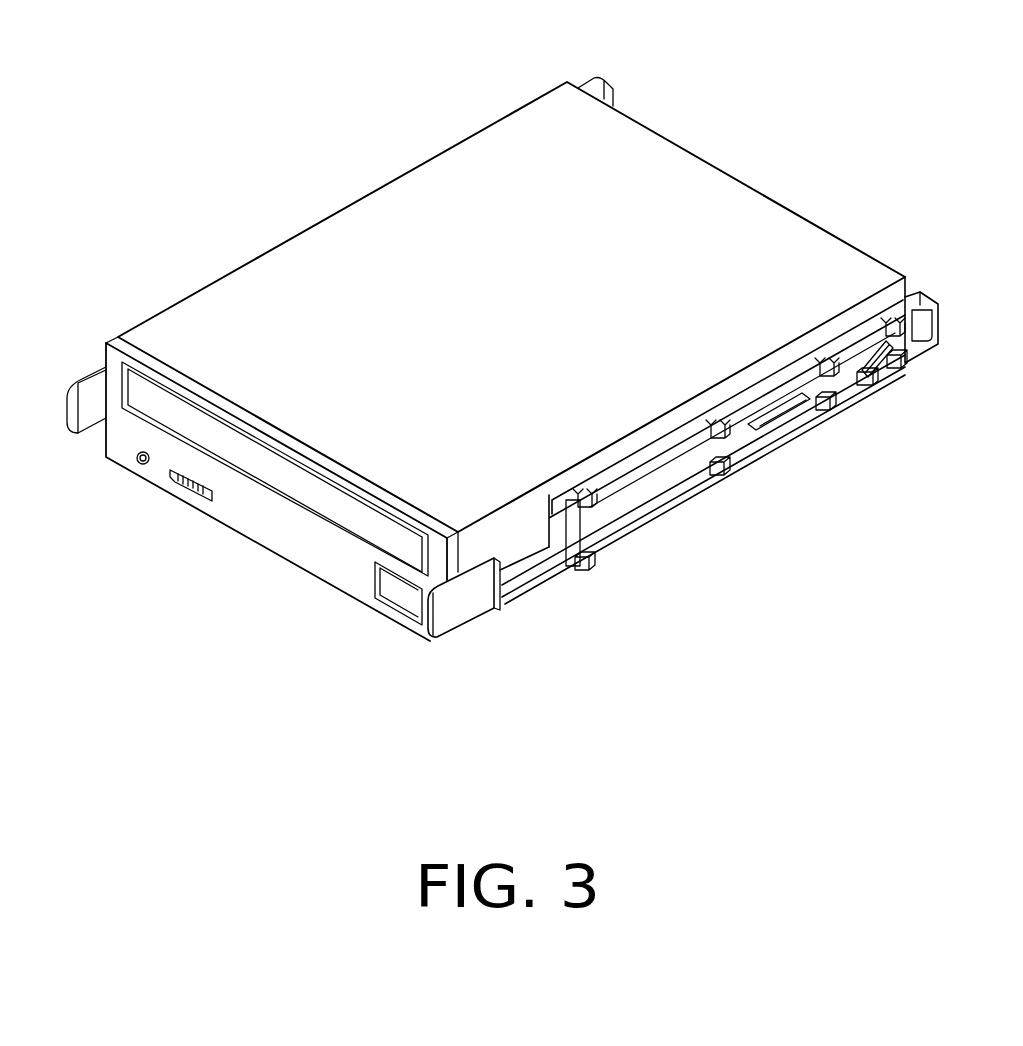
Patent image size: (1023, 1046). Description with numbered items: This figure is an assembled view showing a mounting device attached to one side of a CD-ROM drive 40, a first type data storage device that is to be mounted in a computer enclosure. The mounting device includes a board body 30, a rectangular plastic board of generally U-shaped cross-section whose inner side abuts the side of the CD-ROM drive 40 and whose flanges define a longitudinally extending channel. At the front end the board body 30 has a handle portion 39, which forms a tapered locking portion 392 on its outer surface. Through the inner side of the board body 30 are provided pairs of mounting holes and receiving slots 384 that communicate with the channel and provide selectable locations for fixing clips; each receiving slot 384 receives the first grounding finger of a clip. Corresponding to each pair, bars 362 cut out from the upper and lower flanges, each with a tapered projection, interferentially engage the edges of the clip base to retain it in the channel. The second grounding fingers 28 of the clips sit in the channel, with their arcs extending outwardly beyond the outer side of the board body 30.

The CD-ROM drive 40 is at (727, 162).
The board body 30 is at (924, 286).
The handle portion 39 is at (467, 604).
The tapered locking portion 392 is at (527, 568).
The receiving slot 384 is at (749, 423).
The second grounding finger 28 is at (869, 384).
The bar 362 is at (903, 373).